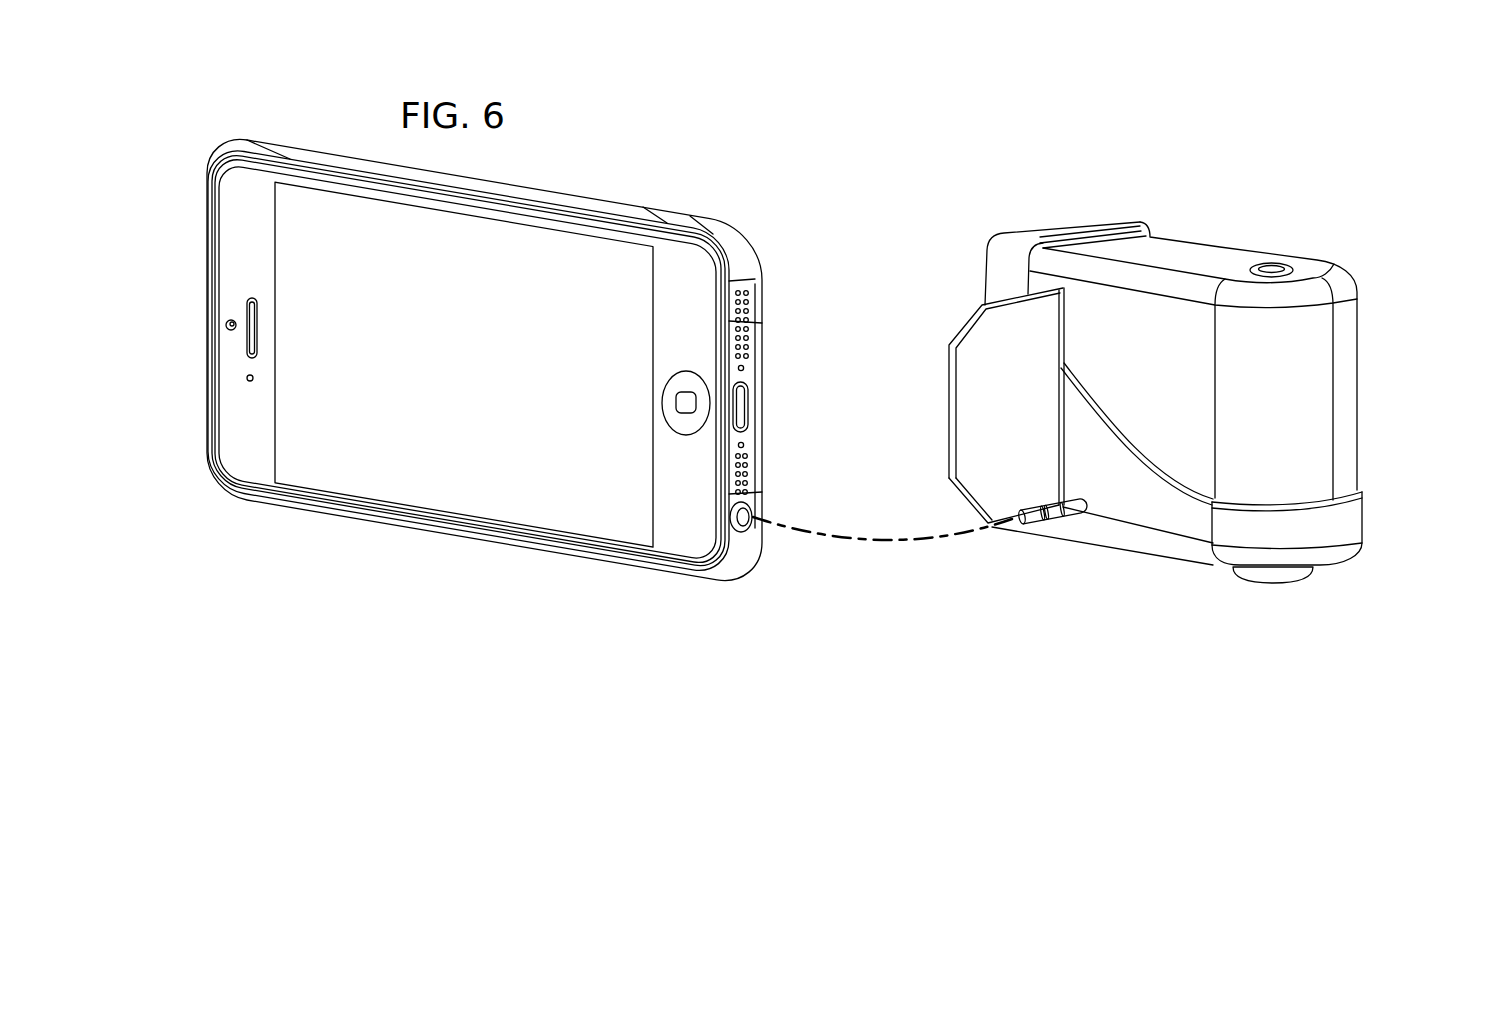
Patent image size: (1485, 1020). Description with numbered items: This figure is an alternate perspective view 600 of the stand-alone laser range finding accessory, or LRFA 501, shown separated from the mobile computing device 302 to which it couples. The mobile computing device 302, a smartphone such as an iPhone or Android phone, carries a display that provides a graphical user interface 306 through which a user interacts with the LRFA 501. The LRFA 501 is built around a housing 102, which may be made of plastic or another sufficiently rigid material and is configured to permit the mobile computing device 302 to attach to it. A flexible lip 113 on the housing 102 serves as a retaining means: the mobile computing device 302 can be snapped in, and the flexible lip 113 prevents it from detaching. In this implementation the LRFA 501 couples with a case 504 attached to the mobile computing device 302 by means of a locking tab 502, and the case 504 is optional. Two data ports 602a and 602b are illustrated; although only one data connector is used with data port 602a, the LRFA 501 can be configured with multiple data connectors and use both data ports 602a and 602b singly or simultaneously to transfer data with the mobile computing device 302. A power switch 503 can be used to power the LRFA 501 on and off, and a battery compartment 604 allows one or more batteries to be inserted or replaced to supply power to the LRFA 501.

The alternate perspective view 600 is at (1115, 130).
The mobile computing device 302 is at (233, 465).
The graphical user interface 306 is at (453, 500).
The case 504 is at (557, 198).
The data port 602b is at (746, 413).
The data port 602a is at (747, 516).
The housing 102 is at (1347, 403).
The stand-alone LRFA 501 is at (1295, 416).
The power switch 503 is at (1273, 266).
The locking tab 502 is at (965, 323).
The flexible lip 113 is at (1058, 524).
The battery compartment 604 is at (1277, 587).